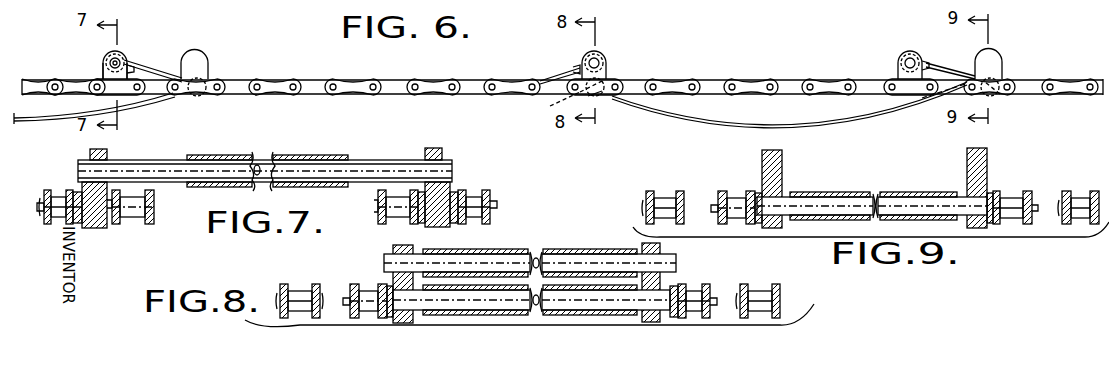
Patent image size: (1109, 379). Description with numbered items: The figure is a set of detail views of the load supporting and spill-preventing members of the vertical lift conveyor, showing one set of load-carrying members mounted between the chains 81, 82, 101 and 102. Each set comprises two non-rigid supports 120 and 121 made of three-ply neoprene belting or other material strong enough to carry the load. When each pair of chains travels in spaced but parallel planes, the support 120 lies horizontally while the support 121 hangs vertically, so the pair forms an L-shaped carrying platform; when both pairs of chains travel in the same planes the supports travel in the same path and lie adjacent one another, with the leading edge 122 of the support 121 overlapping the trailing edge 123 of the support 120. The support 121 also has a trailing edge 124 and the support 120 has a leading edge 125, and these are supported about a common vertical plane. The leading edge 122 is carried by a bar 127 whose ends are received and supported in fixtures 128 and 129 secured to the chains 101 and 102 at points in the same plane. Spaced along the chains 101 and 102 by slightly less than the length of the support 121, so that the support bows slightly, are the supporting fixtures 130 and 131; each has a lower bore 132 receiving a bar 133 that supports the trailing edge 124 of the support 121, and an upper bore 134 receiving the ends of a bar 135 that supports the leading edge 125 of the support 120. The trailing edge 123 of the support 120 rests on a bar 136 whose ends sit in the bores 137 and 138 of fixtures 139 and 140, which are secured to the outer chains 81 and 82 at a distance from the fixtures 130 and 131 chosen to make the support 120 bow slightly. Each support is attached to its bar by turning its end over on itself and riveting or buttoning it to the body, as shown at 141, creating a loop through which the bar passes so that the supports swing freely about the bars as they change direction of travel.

In FIG. 6, the chain 81 is at (293, 78).
In FIG. 7, the chain 81 is at (67, 214).
In FIG. 8, the chain 81 is at (279, 284).
In FIG. 9, the chain 81 is at (668, 192).
In FIG. 7, the chain 82 is at (488, 198).
In FIG. 8, the chain 82 is at (782, 291).
In FIG. 9, the chain 82 is at (1068, 195).
In FIG. 7, the chain 101 is at (143, 214).
In FIG. 8, the chain 101 is at (350, 285).
In FIG. 9, the chain 101 is at (733, 193).
In FIG. 7, the chain 102 is at (392, 197).
In FIG. 8, the chain 102 is at (700, 291).
In FIG. 9, the chain 102 is at (1010, 198).
In FIG. 6, the non-rigid support 120 is at (315, 99).
In FIG. 7, the non-rigid support 120 is at (246, 207).
In FIG. 8, the non-rigid support 120 is at (494, 241).
In FIG. 6, the non-rigid support 121 is at (53, 112).
In FIG. 8, the non-rigid support 121 is at (488, 292).
In FIG. 9, the non-rigid support 121 is at (860, 200).
In FIG. 6, the leading edge 122 is at (930, 80).
In FIG. 6, the trailing edge 123 is at (119, 50).
In FIG. 6, the trailing edge 124 is at (590, 95).
In FIG. 6, the leading edge 125 is at (601, 47).
In FIG. 6, the bar 127 is at (1002, 94).
In FIG. 9, the bar 127 is at (899, 201).
In FIG. 6, the fixture 128 is at (210, 60).
In FIG. 9, the fixture 128 is at (781, 168).
In FIG. 9, the fixture 129 is at (986, 170).
In FIG. 8, the supporting fixture 130 is at (396, 249).
In FIG. 8, the supporting fixture 131 is at (661, 253).
In FIG. 6, the lower bore 132 is at (549, 106).
In FIG. 8, the lower bore 132 is at (420, 313).
In FIG. 6, the bar 133 is at (606, 78).
In FIG. 8, the bar 133 is at (498, 304).
In FIG. 6, the upper bore 134 is at (573, 68).
In FIG. 8, the upper bore 134 is at (423, 251).
In FIG. 6, the bar 135 is at (604, 62).
In FIG. 8, the bar 135 is at (573, 262).
In FIG. 6, the bar 136 is at (129, 52).
In FIG. 7, the bar 136 is at (273, 163).
In FIG. 6, the bore 137 is at (104, 70).
In FIG. 7, the bore 137 is at (109, 151).
In FIG. 7, the bore 138 is at (444, 152).
In FIG. 6, the fixture 139 is at (103, 60).
In FIG. 7, the fixture 139 is at (98, 226).
In FIG. 7, the fixture 140 is at (452, 190).
In FIG. 6, the riveted or buttoned end 141 is at (133, 62).